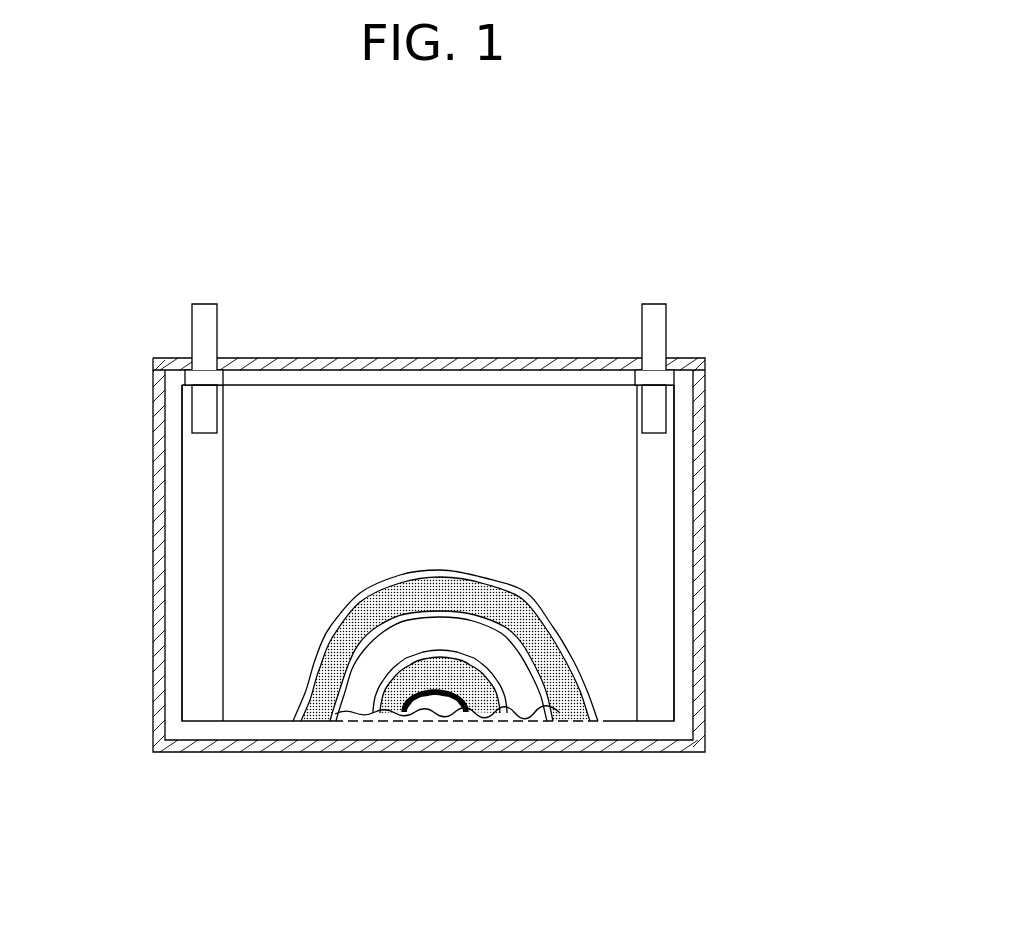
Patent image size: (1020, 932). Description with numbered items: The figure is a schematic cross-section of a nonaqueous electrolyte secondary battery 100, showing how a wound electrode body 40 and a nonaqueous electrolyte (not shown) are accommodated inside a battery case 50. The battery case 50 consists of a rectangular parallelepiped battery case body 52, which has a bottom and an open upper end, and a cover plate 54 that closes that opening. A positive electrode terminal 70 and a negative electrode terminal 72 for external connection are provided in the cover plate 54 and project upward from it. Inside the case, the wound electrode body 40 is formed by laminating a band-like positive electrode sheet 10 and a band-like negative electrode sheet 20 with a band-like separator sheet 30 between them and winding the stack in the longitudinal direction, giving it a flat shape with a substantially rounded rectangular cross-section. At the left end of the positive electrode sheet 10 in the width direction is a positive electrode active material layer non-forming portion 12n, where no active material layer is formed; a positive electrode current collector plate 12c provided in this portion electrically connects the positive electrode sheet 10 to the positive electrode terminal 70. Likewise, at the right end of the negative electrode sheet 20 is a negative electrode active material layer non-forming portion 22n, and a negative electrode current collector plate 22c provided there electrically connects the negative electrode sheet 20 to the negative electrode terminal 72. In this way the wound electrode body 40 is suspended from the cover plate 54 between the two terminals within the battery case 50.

The nonaqueous electrolyte secondary battery 100 is at (708, 222).
The battery case 50 is at (715, 489).
The battery case body 52 is at (707, 568).
The cover plate 54 is at (563, 358).
The positive electrode terminal 70 is at (204, 313).
The negative electrode terminal 72 is at (652, 322).
The positive electrode current collector plate 12c is at (204, 410).
The positive electrode active material layer non-forming portion 12n is at (205, 658).
The negative electrode current collector plate 22c is at (657, 410).
The negative electrode active material layer non-forming portion 22n is at (657, 657).
The positive electrode sheet 10 is at (313, 703).
The negative electrode sheet 20 is at (395, 703).
The separator sheet 30 is at (257, 697).
The wound electrode body 40 is at (617, 732).